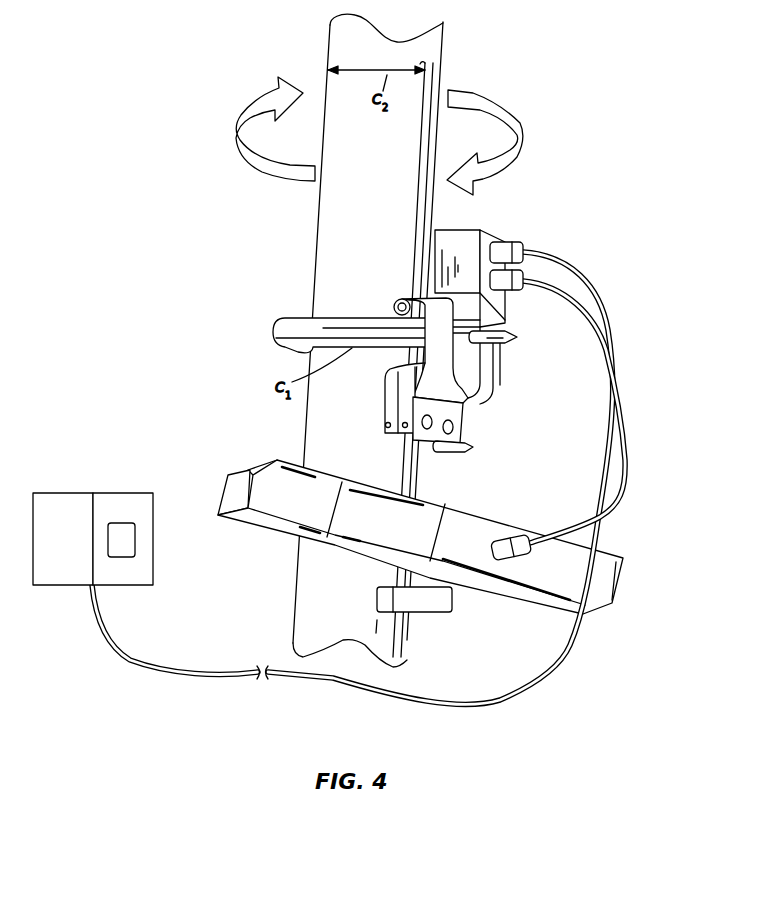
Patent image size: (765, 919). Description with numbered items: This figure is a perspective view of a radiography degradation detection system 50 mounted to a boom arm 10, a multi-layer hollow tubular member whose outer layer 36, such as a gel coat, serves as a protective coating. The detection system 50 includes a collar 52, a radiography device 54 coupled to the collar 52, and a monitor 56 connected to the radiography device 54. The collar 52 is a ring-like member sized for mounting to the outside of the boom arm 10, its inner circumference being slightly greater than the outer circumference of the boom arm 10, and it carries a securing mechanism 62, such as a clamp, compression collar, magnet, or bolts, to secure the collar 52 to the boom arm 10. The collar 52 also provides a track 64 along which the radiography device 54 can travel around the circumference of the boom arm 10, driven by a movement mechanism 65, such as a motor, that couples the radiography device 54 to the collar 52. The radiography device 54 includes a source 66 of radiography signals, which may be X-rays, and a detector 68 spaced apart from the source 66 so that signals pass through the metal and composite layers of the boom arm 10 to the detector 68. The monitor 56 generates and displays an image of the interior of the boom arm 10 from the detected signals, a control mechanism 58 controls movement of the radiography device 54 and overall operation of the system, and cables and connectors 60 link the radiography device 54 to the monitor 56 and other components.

The boom arm 10 is at (328, 218).
The outer layer 36 is at (412, 207).
The radiography degradation detection system 50 is at (595, 244).
The collar 52 is at (272, 323).
The radiography device 54 is at (628, 543).
The monitor 56 is at (118, 492).
The control mechanism 58 is at (63, 493).
The cables and connectors 60 is at (617, 443).
The securing mechanism 62 is at (362, 318).
The track 64 is at (294, 318).
The movement mechanism 65 is at (526, 350).
The source 66 is at (222, 464).
The detector 68 is at (610, 596).